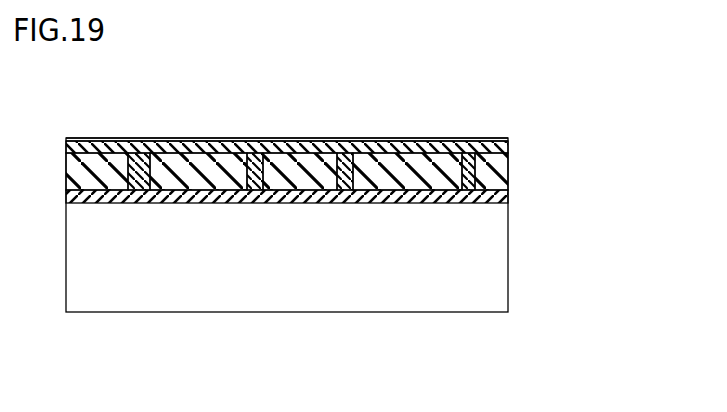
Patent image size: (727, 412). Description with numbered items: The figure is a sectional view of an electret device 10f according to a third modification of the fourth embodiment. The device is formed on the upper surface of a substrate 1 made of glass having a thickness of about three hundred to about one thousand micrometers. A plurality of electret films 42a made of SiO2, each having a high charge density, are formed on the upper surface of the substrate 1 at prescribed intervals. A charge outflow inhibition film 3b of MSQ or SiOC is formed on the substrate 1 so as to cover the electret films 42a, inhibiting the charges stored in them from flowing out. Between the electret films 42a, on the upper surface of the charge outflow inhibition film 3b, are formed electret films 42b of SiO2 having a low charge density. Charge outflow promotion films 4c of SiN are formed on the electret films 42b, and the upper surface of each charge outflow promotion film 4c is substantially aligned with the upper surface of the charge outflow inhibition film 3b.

The substrate 1 is at (500, 246).
The charge outflow inhibition film 3b is at (455, 138).
The charge outflow promotion film 4c is at (497, 142).
The electret film 42b is at (490, 168).
The electret film 42a is at (425, 194).
The electret device 10f is at (361, 202).